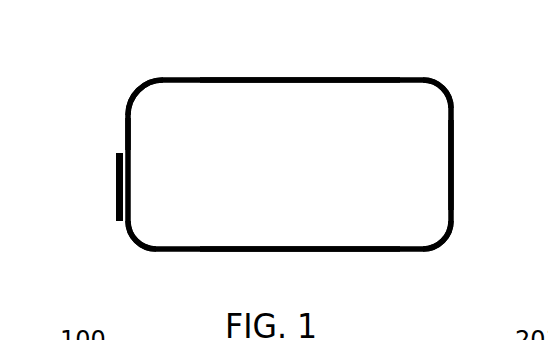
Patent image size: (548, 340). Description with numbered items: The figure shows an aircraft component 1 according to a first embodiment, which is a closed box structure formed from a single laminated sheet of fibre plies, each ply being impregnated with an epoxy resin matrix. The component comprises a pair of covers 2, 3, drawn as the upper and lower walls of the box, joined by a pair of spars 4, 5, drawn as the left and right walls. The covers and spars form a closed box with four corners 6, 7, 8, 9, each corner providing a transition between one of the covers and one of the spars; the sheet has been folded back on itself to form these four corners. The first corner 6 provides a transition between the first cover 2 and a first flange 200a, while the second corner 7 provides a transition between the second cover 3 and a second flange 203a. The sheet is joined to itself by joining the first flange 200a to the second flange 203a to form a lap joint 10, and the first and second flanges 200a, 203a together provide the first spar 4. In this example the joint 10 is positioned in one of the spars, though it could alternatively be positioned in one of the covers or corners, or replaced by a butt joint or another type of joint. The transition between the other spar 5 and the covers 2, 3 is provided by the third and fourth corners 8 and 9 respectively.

The aircraft component 1 is at (127, 72).
The cover 2 is at (289, 80).
The cover 3 is at (252, 248).
The spar 4 is at (110, 150).
The spar 5 is at (453, 155).
The corner 6 is at (128, 97).
The corner 7 is at (128, 238).
The corner 8 is at (425, 80).
The corner 9 is at (444, 241).
The lap joint 10 is at (156, 181).
The first flange 200a is at (131, 146).
The second flange 203a is at (118, 186).